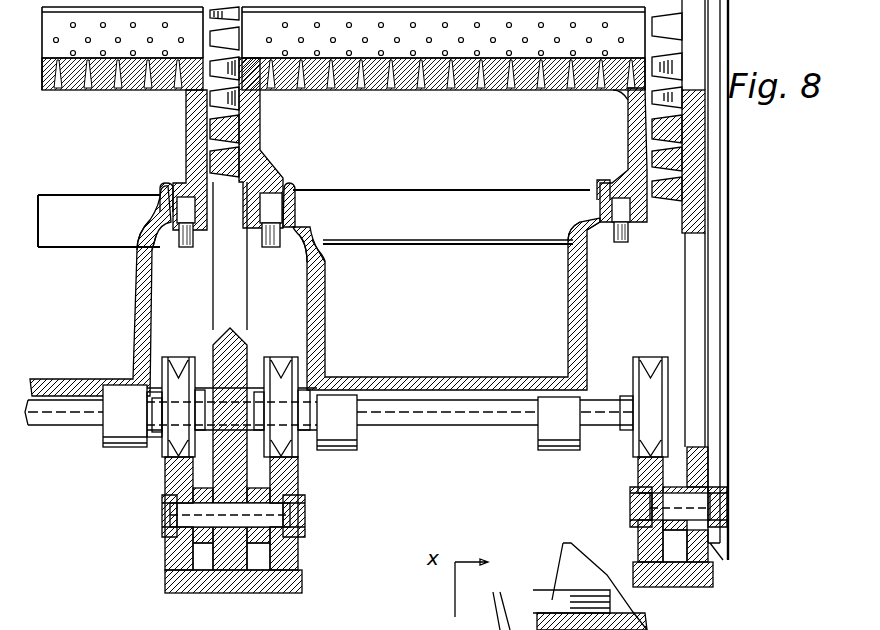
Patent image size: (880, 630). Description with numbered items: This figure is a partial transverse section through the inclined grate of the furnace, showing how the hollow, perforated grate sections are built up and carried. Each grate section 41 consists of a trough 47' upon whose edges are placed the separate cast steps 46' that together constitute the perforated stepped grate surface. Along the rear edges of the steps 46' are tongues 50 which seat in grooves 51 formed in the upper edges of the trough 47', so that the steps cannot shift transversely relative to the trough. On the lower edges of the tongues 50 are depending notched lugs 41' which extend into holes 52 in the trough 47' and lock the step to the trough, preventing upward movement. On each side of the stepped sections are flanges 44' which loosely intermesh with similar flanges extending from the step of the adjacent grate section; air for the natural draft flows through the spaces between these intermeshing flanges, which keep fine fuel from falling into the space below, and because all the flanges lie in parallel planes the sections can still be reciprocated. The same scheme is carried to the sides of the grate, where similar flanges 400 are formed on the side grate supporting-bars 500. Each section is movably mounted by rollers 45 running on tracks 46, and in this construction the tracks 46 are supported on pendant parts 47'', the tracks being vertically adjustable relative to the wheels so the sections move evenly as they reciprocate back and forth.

The step 46' is at (343, 70).
The flange 44' is at (408, 303).
The pendant part 47'' is at (436, 344).
The trough 47' is at (313, 291).
The hole 52 is at (143, 228).
The groove 51 is at (177, 208).
The grate section 41 is at (135, 255).
The notched lug 41' is at (455, 254).
The tongue 50 is at (165, 185).
The roller 45 is at (163, 447).
The track 46 is at (380, 513).
The flange 400 is at (672, 185).
The side grate supporting-bar 500 is at (700, 340).